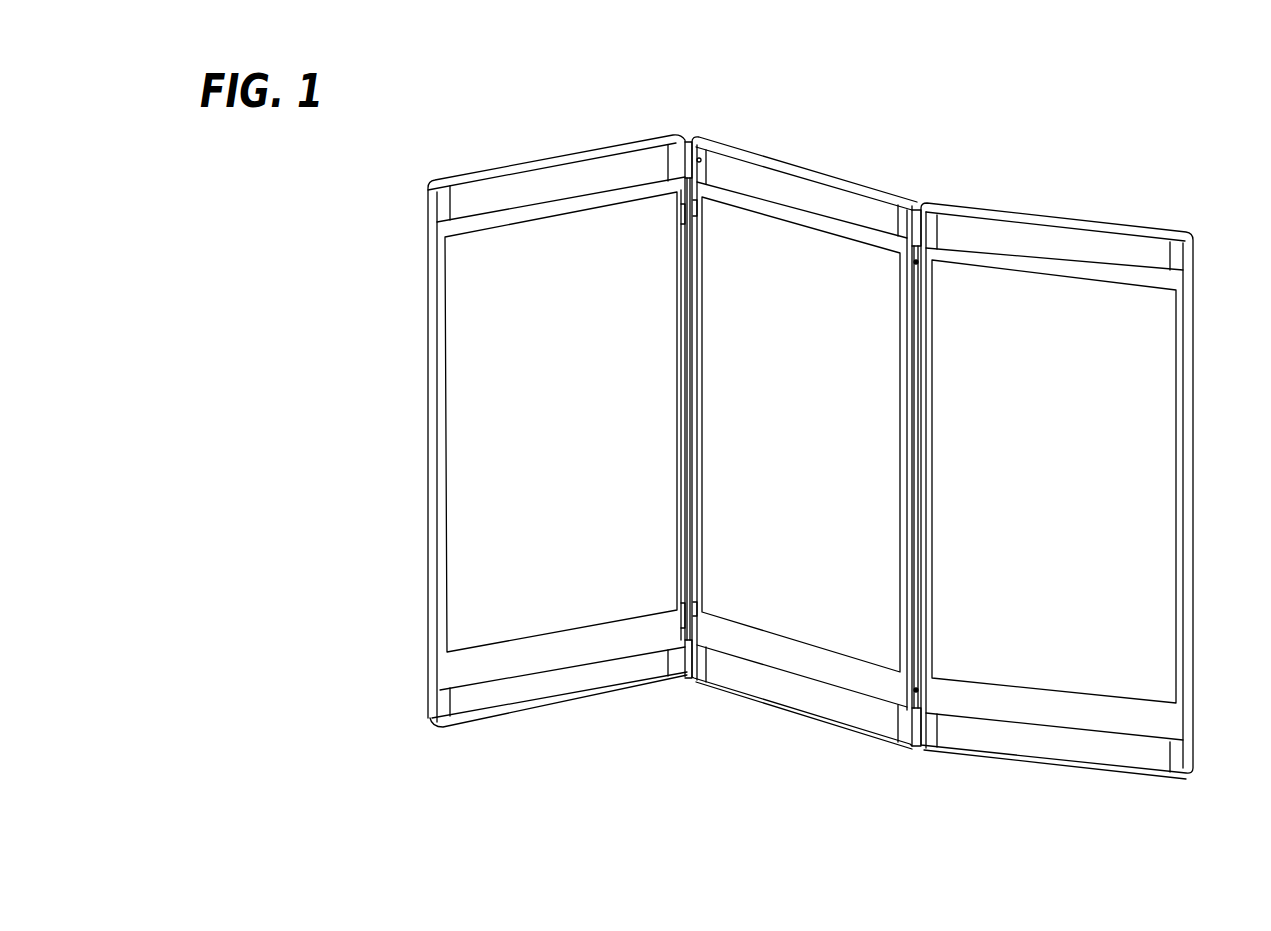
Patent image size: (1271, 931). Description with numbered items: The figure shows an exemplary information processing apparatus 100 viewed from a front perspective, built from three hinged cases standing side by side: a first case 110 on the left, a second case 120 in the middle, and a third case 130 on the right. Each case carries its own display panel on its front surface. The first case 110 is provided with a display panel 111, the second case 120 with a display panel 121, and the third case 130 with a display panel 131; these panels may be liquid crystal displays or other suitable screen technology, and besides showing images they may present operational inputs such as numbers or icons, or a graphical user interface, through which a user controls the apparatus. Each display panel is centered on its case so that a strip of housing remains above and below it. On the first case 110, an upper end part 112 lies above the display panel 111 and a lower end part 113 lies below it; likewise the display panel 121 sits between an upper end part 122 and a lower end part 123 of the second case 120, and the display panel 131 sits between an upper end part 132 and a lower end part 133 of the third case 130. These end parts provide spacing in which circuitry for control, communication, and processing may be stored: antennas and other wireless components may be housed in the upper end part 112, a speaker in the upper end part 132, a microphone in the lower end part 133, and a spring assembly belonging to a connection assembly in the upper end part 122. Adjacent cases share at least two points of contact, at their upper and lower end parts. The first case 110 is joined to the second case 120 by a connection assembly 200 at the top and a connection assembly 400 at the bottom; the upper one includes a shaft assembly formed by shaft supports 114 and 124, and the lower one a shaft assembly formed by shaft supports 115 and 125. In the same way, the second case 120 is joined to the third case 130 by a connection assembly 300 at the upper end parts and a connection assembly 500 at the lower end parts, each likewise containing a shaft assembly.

The information processing apparatus 100 is at (1209, 94).
The first case 110 is at (552, 151).
The display panel 111 is at (478, 623).
The upper end part 112 is at (480, 192).
The lower end part 113 is at (557, 682).
The shaft support 114 is at (684, 218).
The shaft support 115 is at (688, 623).
The second case 120 is at (833, 159).
The display panel 121 is at (813, 608).
The upper end part 122 is at (740, 177).
The lower end part 123 is at (758, 680).
The shaft support 124 is at (681, 204).
The shaft support 125 is at (686, 607).
The third case 130 is at (1115, 207).
The display panel 131 is at (1070, 667).
The upper end part 132 is at (1010, 243).
The lower end part 133 is at (1000, 732).
The connection assembly 200 is at (689, 131).
The connection assembly 300 is at (923, 191).
The connection assembly 400 is at (690, 685).
The connection assembly 500 is at (921, 758).